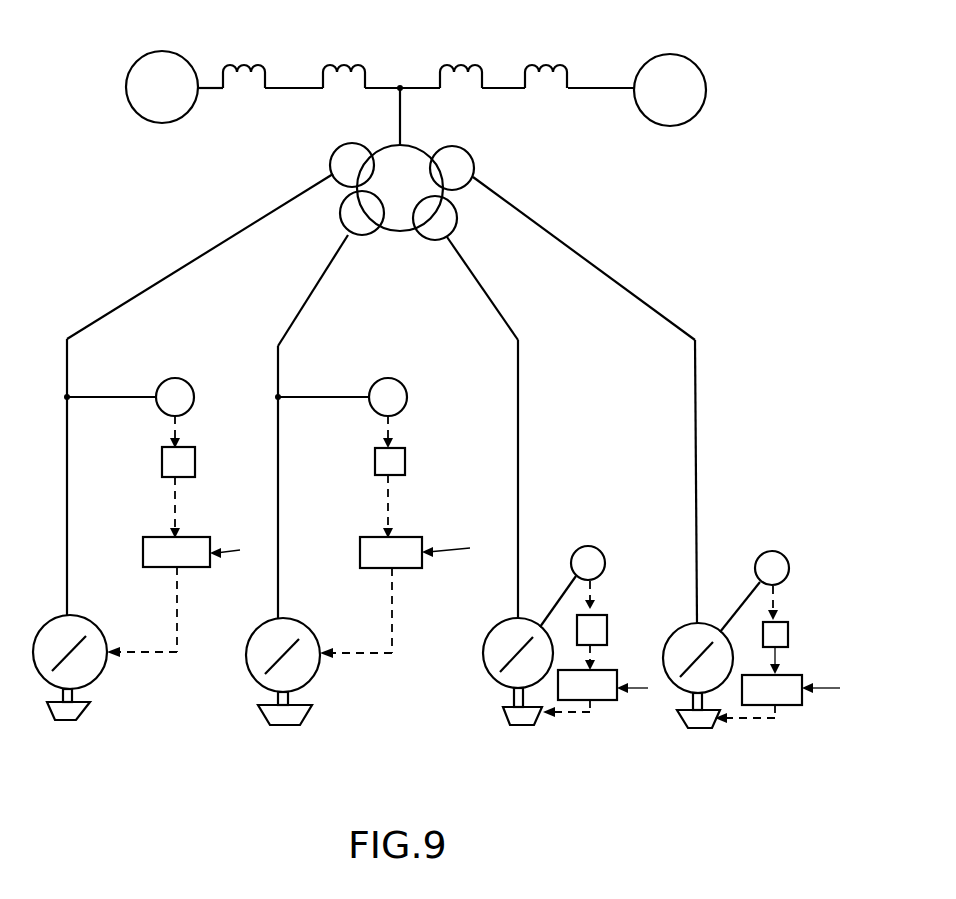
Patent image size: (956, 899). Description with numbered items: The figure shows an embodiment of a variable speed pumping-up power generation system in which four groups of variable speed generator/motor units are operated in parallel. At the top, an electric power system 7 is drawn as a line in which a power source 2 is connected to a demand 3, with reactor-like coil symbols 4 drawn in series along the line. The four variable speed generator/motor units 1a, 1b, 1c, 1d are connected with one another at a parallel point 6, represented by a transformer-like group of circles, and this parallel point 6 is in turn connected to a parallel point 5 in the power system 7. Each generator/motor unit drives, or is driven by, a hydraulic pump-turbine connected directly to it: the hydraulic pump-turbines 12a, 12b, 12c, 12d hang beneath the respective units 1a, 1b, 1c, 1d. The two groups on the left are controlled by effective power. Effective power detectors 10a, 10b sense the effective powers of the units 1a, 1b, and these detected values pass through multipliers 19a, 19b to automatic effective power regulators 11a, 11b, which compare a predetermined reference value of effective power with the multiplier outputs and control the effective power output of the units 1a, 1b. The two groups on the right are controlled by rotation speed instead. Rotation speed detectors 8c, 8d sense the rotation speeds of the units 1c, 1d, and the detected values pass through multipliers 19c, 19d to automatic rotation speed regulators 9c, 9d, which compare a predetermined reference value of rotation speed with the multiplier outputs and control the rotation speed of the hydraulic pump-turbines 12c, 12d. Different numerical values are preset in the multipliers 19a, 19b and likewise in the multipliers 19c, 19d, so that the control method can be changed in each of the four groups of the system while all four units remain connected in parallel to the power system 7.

The variable speed generator/motor unit 1a is at (95, 626).
The variable speed generator/motor unit 1b is at (308, 629).
The variable speed generator/motor unit 1c is at (492, 628).
The variable speed generator/motor unit 1d is at (675, 632).
The power source 2 is at (190, 62).
The demand 3 is at (700, 68).
The reactor 4 is at (470, 70).
The parallel point 5 is at (402, 86).
The parallel point 6 is at (430, 152).
The power system 7 is at (600, 88).
The rotation speed detector 8c is at (598, 547).
The rotation speed detector 8d is at (782, 552).
The automatic rotation speed regulator 9c is at (605, 700).
The automatic rotation speed regulator 9d is at (795, 705).
The effective power detector 10a is at (193, 380).
The effective power detector 10b is at (400, 380).
The automatic effective power regulator 11a is at (205, 537).
The automatic effective power regulator 11b is at (415, 537).
The hydraulic pump-turbine 12a is at (80, 712).
The hydraulic pump-turbine 12b is at (300, 712).
The hydraulic pump-turbine 12c is at (535, 725).
The hydraulic pump-turbine 12d is at (712, 728).
The multiplier 19a is at (195, 458).
The multiplier 19b is at (405, 458).
The multiplier 19c is at (607, 630).
The multiplier 19d is at (788, 633).